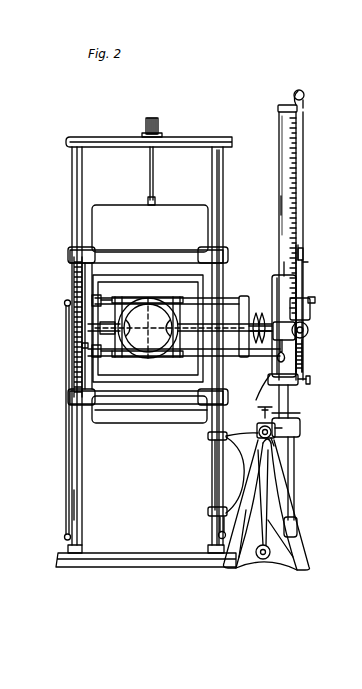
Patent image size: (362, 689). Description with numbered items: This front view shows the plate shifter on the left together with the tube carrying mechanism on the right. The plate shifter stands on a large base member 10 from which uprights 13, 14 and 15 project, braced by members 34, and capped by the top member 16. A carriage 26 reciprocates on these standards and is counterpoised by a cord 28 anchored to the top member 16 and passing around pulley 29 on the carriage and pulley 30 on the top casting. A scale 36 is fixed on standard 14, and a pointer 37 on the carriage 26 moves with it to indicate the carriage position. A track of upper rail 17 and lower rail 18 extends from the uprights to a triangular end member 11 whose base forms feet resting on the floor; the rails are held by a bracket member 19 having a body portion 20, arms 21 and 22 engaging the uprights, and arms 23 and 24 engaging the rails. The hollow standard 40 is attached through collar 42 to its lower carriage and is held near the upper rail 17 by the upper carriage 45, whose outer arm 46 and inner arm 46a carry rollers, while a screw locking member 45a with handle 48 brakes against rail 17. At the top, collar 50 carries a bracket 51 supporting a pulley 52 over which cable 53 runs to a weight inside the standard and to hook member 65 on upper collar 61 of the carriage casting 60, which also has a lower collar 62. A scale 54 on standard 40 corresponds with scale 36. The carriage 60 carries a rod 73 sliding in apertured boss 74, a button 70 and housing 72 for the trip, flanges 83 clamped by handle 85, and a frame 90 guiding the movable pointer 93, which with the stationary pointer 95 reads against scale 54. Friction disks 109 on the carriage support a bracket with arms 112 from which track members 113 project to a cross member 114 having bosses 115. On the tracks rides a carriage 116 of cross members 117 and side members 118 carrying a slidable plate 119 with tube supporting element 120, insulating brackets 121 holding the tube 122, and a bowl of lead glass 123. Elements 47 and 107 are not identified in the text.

The base member 10 is at (150, 567).
The end member 11 is at (292, 562).
The upright 13 is at (230, 490).
The upright 14 is at (82, 505).
The upright 15 is at (82, 470).
The top member 16 is at (92, 139).
The upper rail 17 is at (272, 441).
The lower rail 18 is at (268, 560).
The bracket member 19 is at (216, 455).
The body portion 20 is at (217, 487).
The arm 21 is at (215, 441).
The arm 22 is at (213, 514).
The arm 23 is at (214, 472).
The arm 24 is at (261, 560).
The carriage 26 is at (70, 248).
The cord 28 is at (148, 160).
The pulley 29 is at (149, 200).
The pulley 30 is at (158, 120).
The brace member 34 is at (66, 480).
The scale 36 is at (74, 290).
The pointer 37 is at (83, 348).
The standard 40 is at (294, 495).
The collar 42 is at (297, 519).
The upper carriage 45 is at (300, 426).
The screw locking member 45a is at (252, 408).
The outer arm 46 is at (305, 445).
The inner arm 46a is at (260, 431).
The arm 47 is at (277, 435).
The operating handle 48 is at (300, 413).
The collar 50 is at (281, 104).
The bracket 51 is at (296, 90).
The pulley 52 is at (303, 92).
The cable 53 is at (304, 135).
The scale 54 is at (281, 200).
The carriage casting 60 is at (274, 300).
The upper collar 61 is at (266, 312).
The lower collar 62 is at (300, 376).
The hook member 65 is at (302, 263).
The button 70 is at (303, 270).
The housing 72 is at (309, 331).
The rod member 73 is at (304, 292).
The apertured boss 74 is at (310, 306).
The flange 83 is at (303, 344).
The handle 85 is at (285, 357).
The frame 90 is at (300, 318).
The pointer 93 is at (296, 250).
The second pointer 95 is at (284, 264).
The nub 107 is at (315, 299).
The friction disk 109 is at (258, 388).
The arm 112 is at (247, 296).
The track member 113 is at (92, 300).
The cross member 114 is at (100, 326).
The boss 115 is at (101, 300).
The carriage 116 is at (112, 290).
The cross member 117 is at (182, 300).
The side member 118 is at (130, 300).
The plate 119 is at (158, 405).
The tube supporting element 120 is at (170, 380).
The bracket 121 is at (178, 380).
The tube 122 is at (165, 385).
The bowl of lead glass 123 is at (157, 293).